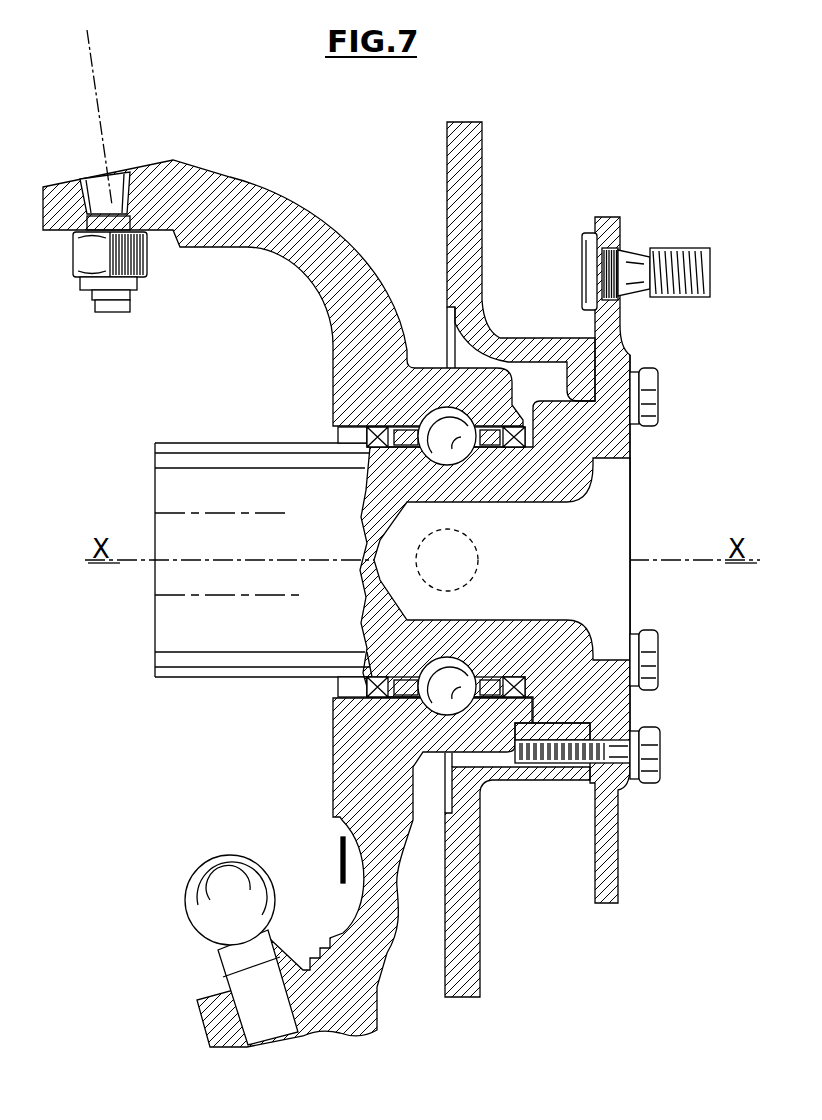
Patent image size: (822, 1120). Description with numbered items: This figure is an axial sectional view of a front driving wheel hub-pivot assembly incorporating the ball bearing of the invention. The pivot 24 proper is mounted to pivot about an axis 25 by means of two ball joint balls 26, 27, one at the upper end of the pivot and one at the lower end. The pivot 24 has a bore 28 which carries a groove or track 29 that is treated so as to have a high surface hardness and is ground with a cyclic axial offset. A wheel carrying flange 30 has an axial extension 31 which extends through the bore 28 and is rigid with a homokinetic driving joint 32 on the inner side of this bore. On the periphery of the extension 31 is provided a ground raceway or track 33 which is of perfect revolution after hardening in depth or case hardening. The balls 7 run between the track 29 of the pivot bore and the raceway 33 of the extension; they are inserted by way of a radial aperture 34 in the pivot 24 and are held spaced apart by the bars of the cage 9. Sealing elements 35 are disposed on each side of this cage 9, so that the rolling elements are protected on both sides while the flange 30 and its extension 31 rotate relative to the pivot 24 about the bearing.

The balls 7 is at (464, 450).
The cage 9 is at (408, 428).
The pivot 24 is at (352, 247).
The axis 25 is at (111, 170).
The ball joint ball 26 is at (108, 195).
The ball joint ball 27 is at (242, 880).
The bore 28 is at (350, 677).
The groove or track 29 is at (443, 420).
The wheel carrying flange 30 is at (630, 353).
The axial extension 31 is at (377, 660).
The homokinetic driving joint 32 is at (245, 463).
The ground raceway or track 33 is at (440, 460).
The radial aperture 34 is at (477, 560).
The sealing elements 35 is at (386, 428).